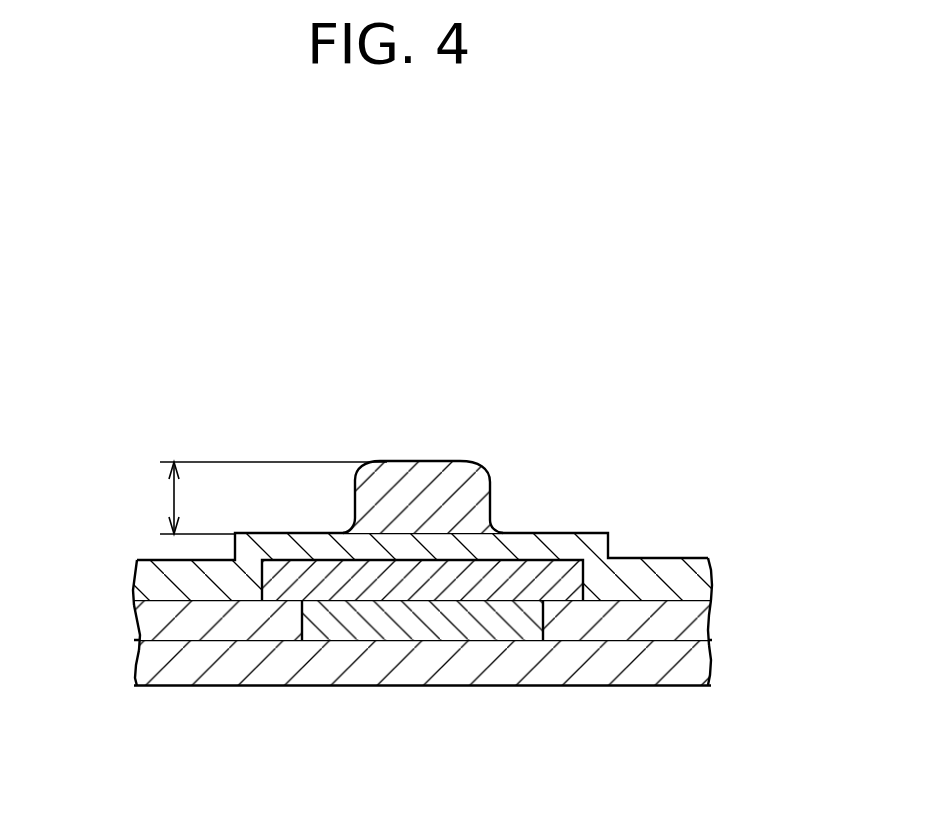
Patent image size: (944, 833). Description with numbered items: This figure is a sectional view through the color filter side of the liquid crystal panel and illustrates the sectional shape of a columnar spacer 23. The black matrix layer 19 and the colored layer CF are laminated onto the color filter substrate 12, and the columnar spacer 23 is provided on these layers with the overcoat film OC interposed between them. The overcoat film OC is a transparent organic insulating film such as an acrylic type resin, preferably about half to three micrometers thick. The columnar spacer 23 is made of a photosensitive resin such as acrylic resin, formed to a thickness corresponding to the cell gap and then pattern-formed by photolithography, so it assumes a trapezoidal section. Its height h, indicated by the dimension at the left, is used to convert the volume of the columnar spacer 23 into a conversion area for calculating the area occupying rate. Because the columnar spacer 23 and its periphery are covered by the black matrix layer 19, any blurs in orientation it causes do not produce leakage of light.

The color filter substrate 12 is at (313, 670).
The black matrix layer 19 is at (428, 627).
The columnar spacer 23 is at (437, 487).
The overcoat film OC is at (646, 580).
The colored layer CF is at (670, 615).
The height of the columnar spacer h is at (174, 499).